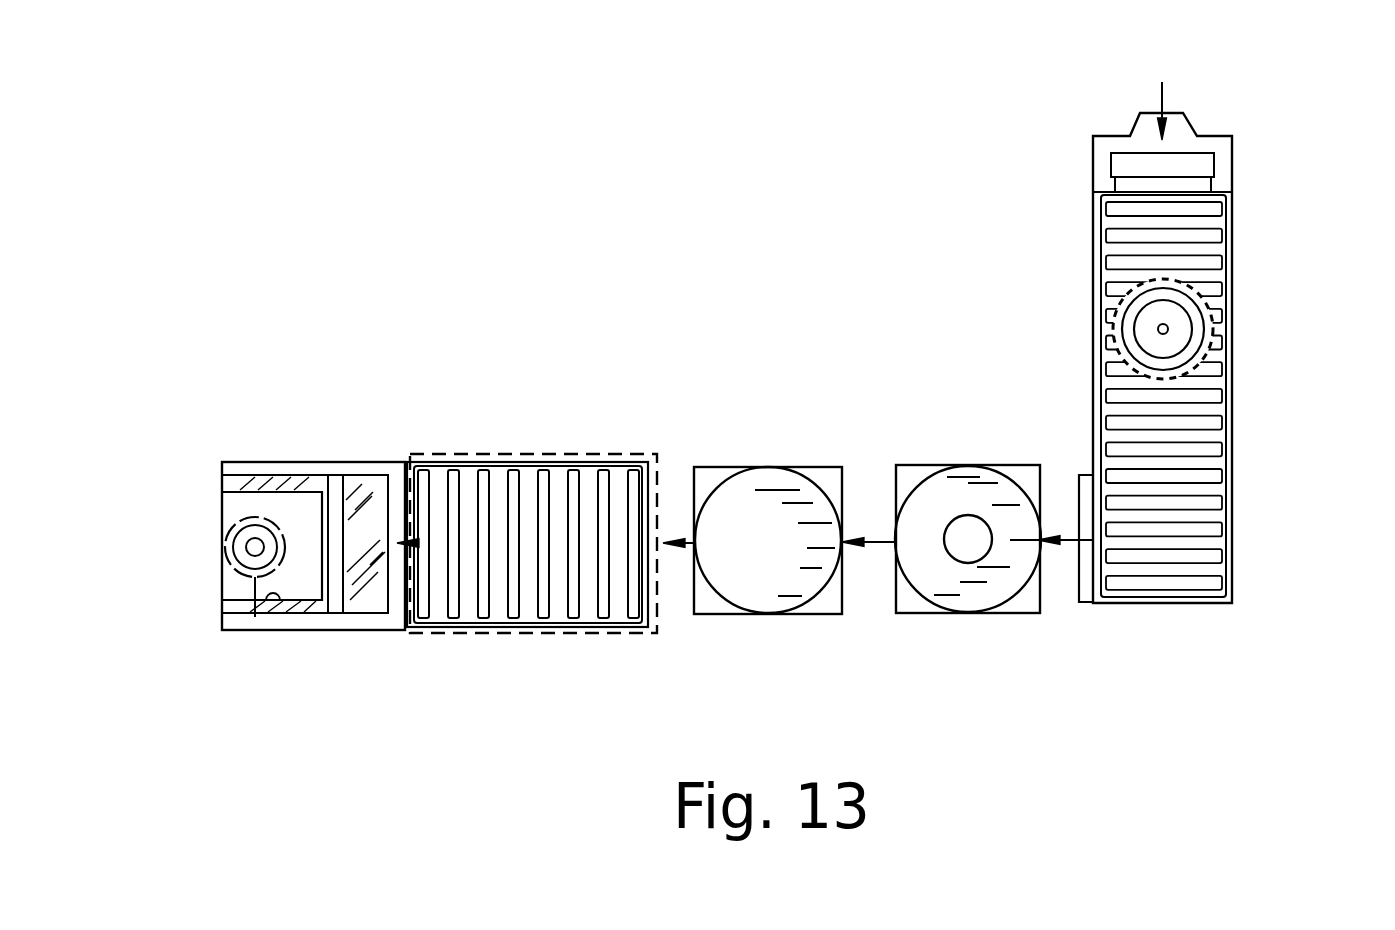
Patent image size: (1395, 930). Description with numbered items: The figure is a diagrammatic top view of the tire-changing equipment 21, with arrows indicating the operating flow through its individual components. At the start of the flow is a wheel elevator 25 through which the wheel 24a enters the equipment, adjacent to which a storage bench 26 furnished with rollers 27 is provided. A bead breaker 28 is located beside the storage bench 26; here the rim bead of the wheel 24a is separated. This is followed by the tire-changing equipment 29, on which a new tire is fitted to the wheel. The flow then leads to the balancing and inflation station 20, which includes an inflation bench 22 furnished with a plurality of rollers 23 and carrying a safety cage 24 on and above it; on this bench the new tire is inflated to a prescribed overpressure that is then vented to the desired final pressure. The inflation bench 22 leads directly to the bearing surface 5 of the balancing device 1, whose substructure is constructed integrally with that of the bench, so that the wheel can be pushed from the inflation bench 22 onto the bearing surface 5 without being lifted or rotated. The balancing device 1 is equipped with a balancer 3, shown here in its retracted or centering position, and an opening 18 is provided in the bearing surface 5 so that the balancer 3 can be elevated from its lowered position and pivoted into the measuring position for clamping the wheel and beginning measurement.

The balancing device 1 is at (271, 552).
The balancer 3 is at (233, 523).
The bearing surface 5 is at (274, 472).
The opening 18 is at (254, 628).
The balancing and inflation station 20 is at (549, 441).
The tire-changing equipment 21 is at (628, 197).
The inflation bench 22 is at (599, 464).
The rollers 23 is at (600, 497).
The safety cage 24 is at (510, 453).
The wheel 24a is at (1188, 317).
The wheel elevator 25 is at (1217, 320).
The storage bench 26 is at (1253, 404).
The rollers 27 is at (1188, 450).
The bead breaker 28 is at (1004, 641).
The tire-changing equipment 29 is at (801, 649).